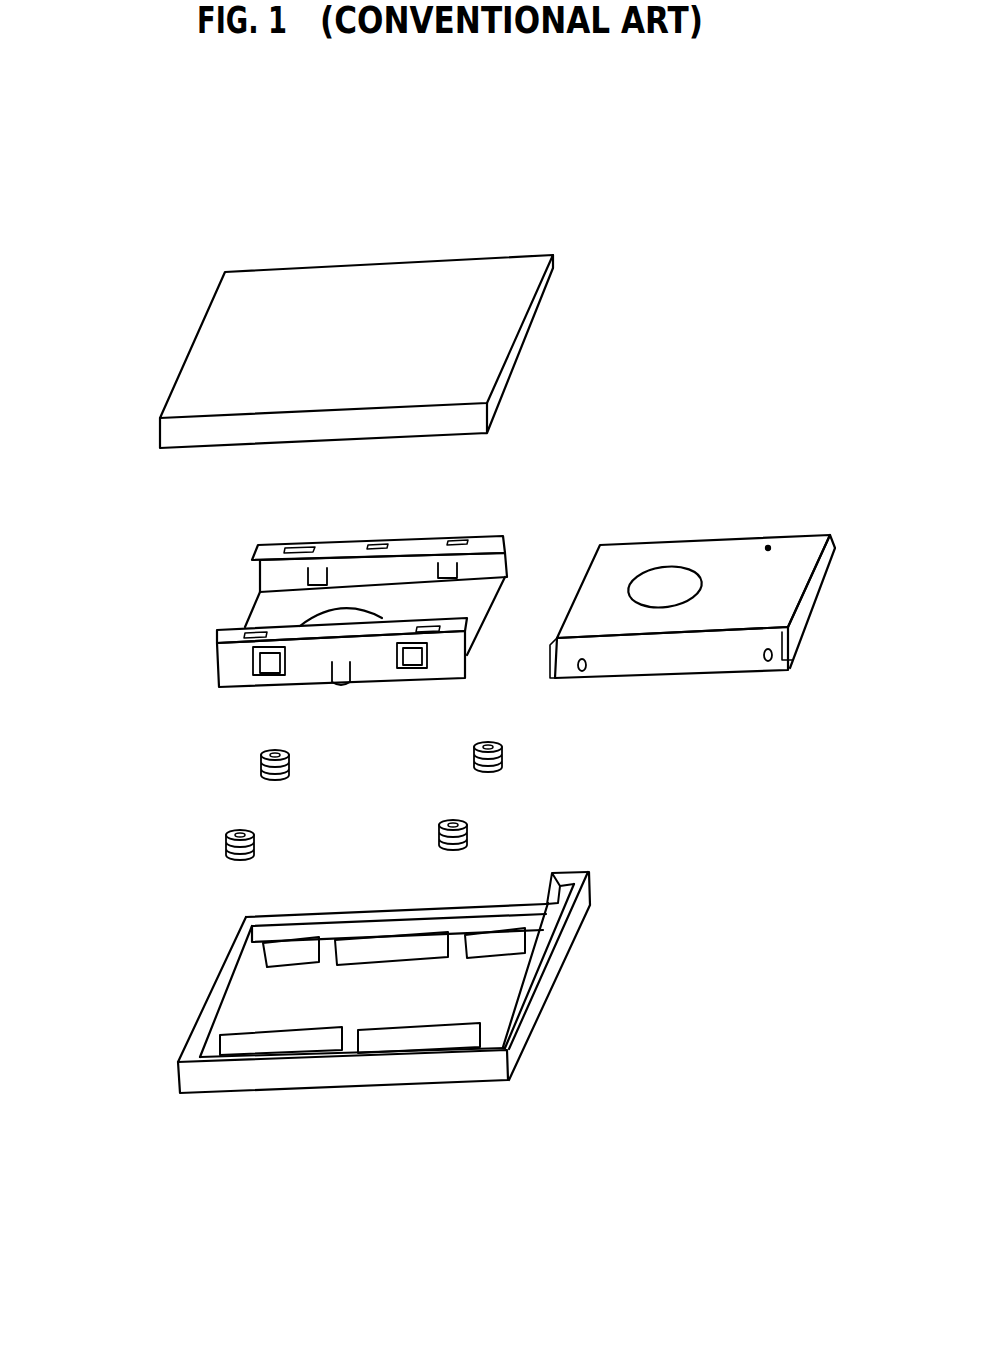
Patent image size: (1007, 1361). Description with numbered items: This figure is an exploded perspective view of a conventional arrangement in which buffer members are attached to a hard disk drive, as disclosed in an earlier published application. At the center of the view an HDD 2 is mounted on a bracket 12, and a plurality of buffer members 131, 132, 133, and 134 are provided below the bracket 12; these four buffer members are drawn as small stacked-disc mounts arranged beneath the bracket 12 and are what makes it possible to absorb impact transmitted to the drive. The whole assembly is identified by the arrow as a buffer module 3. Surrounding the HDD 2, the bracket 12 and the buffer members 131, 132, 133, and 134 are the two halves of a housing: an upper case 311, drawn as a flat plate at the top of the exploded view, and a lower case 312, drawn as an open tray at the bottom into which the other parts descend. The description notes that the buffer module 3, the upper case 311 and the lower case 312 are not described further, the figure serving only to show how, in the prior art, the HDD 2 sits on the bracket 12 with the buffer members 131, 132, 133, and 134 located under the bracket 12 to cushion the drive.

The buffer module 3 is at (148, 1122).
The upper case 311 is at (452, 292).
The lower case 312 is at (340, 1077).
The bracket 12 is at (497, 540).
The HDD 2 is at (707, 662).
The buffer member 131 is at (502, 752).
The buffer member 132 is at (467, 835).
The buffer member 133 is at (262, 758).
The buffer member 134 is at (225, 845).